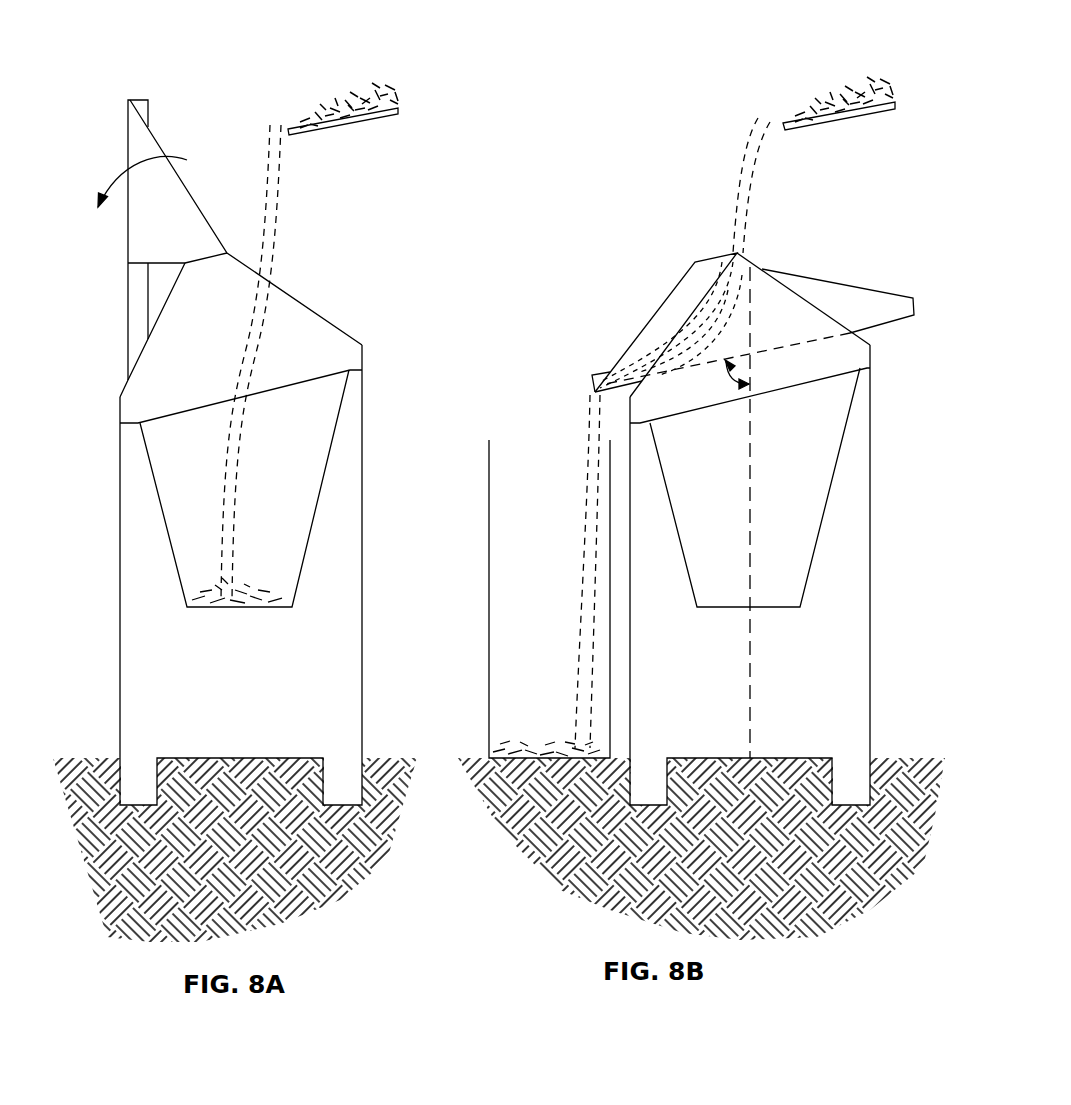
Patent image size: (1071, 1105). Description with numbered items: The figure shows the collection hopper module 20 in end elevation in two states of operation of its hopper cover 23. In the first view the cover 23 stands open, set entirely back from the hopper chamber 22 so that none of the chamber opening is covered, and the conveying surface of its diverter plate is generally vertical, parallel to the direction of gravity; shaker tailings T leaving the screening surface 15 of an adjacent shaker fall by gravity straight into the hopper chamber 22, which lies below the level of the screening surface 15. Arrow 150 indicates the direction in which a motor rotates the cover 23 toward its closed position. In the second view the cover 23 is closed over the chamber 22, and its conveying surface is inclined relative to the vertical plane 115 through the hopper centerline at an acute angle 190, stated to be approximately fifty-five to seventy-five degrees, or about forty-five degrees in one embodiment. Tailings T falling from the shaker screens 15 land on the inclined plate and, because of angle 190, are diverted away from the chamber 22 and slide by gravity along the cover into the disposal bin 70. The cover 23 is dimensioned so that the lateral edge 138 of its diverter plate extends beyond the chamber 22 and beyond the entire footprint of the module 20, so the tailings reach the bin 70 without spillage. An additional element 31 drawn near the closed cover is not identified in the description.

In FIG. 8A, the screening surface 15 is at (365, 118).
In FIG. 8B, the screening surface 15 is at (865, 117).
In FIG. 8A, the shaker tailings T is at (277, 208).
In FIG. 8B, the shaker tailings T is at (740, 213).
In FIG. 8A, the hopper cover 23 is at (128, 132).
In FIG. 8B, the hopper cover 23 is at (652, 323).
In FIG. 8A, the arrow 150 is at (107, 185).
In FIG. 8A, the hopper chamber 22 is at (168, 448).
In FIG. 8B, the hopper chamber 22 is at (805, 443).
In FIG. 8A, the collection hopper module 20 is at (120, 698).
In FIG. 8B, the collection hopper module 20 is at (870, 677).
In FIG. 8B, the deflector board 31 is at (780, 340).
In FIG. 8B, the lateral edge 138 is at (595, 388).
In FIG. 8B, the acute angle 190 is at (731, 377).
In FIG. 8B, the disposal bin 70 is at (524, 630).
In FIG. 8B, the vertical plane 115 is at (750, 657).